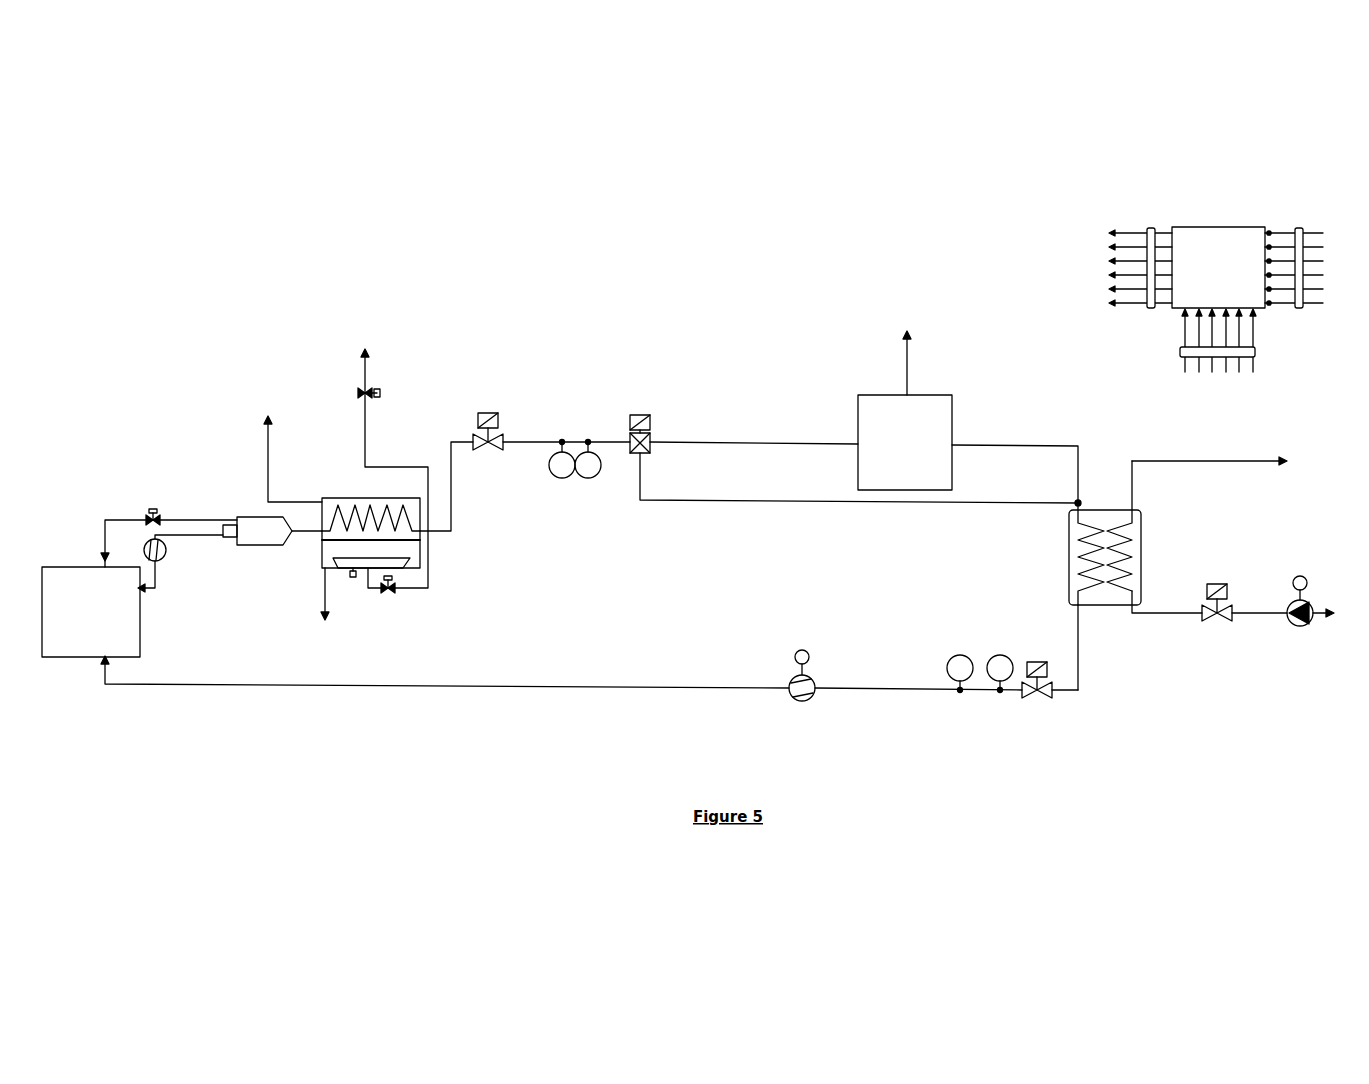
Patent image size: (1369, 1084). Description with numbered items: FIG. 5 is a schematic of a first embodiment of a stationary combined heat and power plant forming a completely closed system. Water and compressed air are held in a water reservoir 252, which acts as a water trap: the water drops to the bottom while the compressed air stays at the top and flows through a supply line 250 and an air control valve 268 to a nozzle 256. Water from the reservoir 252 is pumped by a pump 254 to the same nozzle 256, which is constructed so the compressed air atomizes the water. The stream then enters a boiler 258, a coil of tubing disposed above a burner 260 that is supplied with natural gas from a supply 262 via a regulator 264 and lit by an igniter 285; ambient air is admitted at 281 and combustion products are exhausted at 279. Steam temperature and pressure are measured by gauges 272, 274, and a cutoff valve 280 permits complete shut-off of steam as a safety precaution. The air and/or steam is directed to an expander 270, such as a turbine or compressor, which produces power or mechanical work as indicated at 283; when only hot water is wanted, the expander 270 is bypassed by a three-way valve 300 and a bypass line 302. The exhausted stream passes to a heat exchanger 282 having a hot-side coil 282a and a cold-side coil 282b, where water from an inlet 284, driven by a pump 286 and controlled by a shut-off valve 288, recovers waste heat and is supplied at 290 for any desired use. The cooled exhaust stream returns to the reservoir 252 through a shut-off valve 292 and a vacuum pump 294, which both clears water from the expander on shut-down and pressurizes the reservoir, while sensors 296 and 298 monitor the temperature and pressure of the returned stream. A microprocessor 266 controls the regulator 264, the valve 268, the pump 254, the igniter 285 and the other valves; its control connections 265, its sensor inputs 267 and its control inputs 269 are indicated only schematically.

The fuel supply line 250 is at (105, 541).
The water reservoir 252 is at (91, 612).
The pump 254 is at (165, 555).
The nozzle 256 is at (257, 531).
The boiler 258 is at (355, 514).
The burner 260 is at (410, 560).
The supply 262 is at (362, 374).
The regulator 264 is at (391, 592).
The control connections 265 is at (1153, 227).
The microprocessor 266 is at (1218, 267).
The sensor inputs 267 is at (1258, 352).
The air control valve 268 is at (152, 509).
The control inputs 269 is at (1300, 227).
The expander 270 is at (905, 442).
The temperature gauge 272 is at (562, 478).
The pressure gauge 274 is at (588, 478).
The combustion exhaust 279 is at (260, 437).
The cutoff valve 280 is at (488, 413).
The ambient air inlet 281 is at (322, 606).
The heat exchanger 282 is at (1105, 533).
The hot-side coil 282a is at (1080, 523).
The cold-side coil 282b is at (1132, 523).
The mechanical work output 283 is at (912, 372).
The inlet 284 is at (1319, 610).
The igniter 285 is at (352, 580).
The pump 286 is at (1300, 626).
The shut-off valve 288 is at (1217, 622).
The heated water outlet 290 is at (1256, 460).
The shut-off valve 292 is at (1037, 700).
The vacuum pump 294 is at (800, 702).
The temperature sensor 296 is at (958, 655).
The pressure sensor 298 is at (997, 655).
The 3-way valve 300 is at (637, 415).
The bypass line 302 is at (775, 500).